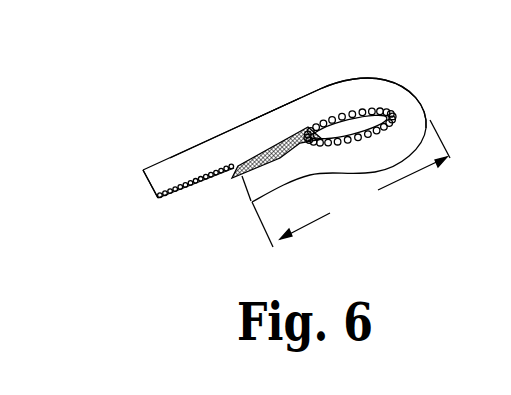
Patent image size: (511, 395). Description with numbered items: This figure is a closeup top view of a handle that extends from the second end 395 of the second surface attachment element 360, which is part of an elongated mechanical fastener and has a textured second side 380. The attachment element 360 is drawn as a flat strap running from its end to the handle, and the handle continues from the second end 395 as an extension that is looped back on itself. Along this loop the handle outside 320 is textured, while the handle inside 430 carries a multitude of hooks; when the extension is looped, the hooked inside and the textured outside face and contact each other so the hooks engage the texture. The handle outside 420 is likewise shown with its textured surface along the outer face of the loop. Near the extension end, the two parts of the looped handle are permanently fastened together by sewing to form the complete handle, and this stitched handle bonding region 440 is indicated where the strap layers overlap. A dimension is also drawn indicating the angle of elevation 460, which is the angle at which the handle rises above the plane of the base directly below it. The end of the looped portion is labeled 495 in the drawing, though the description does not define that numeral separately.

The handle outside 320 is at (194, 194).
The second surface attachment element 360 is at (197, 145).
The second side 380 is at (143, 169).
The second end 395 is at (230, 132).
The handle outside 420 is at (356, 81).
The handle inside 430 is at (380, 110).
The handle bonding region 440 is at (277, 107).
The angle of elevation 460 is at (351, 183).
The second end of strap 495 is at (247, 193).